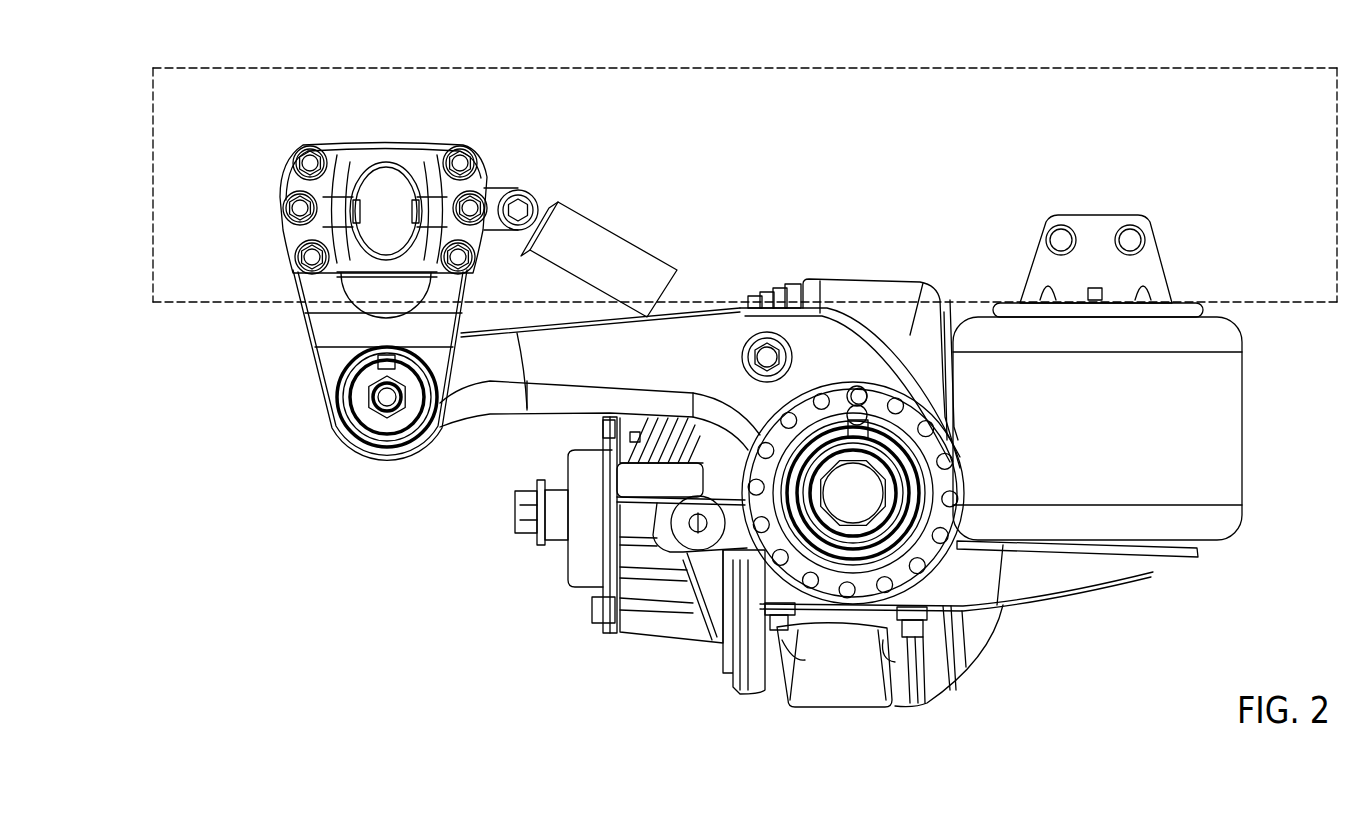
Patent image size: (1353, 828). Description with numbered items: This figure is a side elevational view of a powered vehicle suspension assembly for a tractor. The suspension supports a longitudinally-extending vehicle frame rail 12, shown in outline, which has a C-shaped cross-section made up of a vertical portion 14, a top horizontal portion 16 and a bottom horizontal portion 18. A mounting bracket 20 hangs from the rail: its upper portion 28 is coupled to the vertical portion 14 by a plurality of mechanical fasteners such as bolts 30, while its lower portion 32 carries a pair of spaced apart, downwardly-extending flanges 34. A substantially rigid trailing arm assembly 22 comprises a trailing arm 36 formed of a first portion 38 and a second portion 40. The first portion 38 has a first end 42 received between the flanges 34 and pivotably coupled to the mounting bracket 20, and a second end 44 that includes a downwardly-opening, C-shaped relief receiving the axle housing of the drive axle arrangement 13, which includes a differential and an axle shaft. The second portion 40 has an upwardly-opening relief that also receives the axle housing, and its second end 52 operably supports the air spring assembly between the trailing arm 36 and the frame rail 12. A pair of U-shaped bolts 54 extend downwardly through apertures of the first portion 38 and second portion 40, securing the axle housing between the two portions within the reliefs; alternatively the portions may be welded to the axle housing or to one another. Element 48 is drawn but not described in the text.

The vehicle frame rail 12 is at (699, 188).
The drive axle arrangement 13 is at (1035, 373).
The vertical portion 14 is at (153, 222).
The top horizontal portion 16 is at (215, 68).
The bottom horizontal portion 18 is at (196, 303).
The mounting bracket 20 is at (387, 309).
The trailing arm assembly 22 is at (670, 253).
The upper portion 28 is at (388, 224).
The bolt 30 is at (307, 152).
The lower portion 32 is at (340, 437).
The flange 34 is at (376, 458).
The trailing arm 36 is at (710, 336).
The first portion 38 is at (740, 303).
The second portion 40 is at (979, 624).
The first end 42 is at (455, 410).
The second end 44 is at (862, 347).
The lower bracket 48 is at (948, 612).
The second end 52 is at (1120, 565).
The U-shaped bolt 54 is at (946, 300).